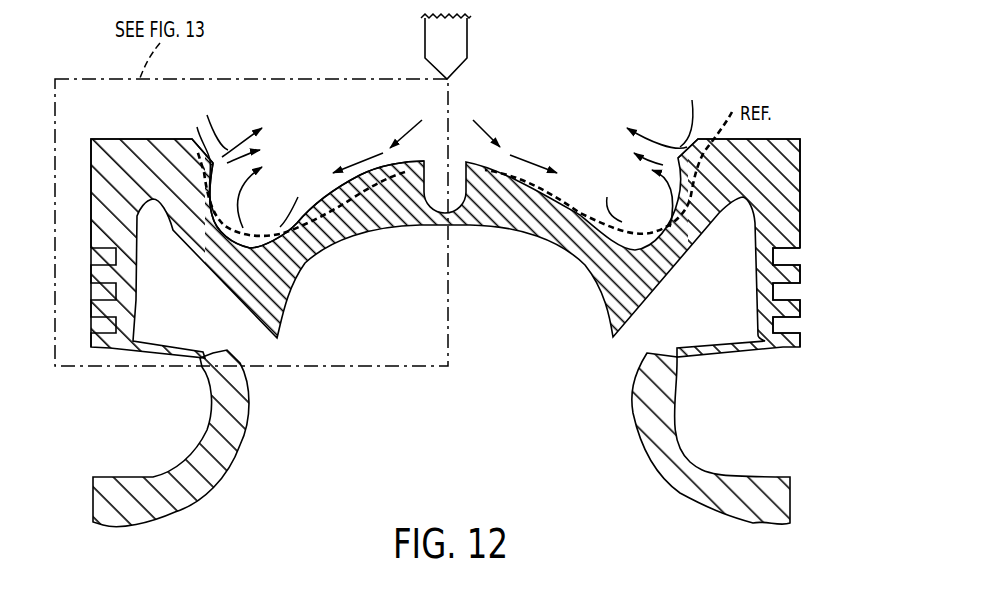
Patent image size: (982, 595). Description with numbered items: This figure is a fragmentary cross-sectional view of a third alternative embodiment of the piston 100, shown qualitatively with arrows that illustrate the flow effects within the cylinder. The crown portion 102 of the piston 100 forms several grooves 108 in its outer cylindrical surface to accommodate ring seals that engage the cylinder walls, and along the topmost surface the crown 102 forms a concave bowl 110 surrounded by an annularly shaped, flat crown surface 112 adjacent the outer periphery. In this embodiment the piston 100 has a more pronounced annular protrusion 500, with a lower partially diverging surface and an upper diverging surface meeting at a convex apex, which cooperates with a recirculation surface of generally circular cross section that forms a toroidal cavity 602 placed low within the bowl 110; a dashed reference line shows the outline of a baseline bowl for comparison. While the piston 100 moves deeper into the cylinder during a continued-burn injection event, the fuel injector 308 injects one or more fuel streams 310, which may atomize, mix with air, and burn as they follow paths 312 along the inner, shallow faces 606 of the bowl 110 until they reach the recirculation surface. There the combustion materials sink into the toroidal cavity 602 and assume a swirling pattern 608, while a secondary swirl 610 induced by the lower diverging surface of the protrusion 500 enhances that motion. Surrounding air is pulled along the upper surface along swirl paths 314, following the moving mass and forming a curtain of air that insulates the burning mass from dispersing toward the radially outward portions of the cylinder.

The piston 100 is at (817, 63).
The crown portion 102 is at (790, 168).
The grooves 108 is at (90, 255).
The bowl 110 is at (548, 93).
The flat crown surface 112 is at (103, 139).
The fuel injector 308 is at (458, 39).
The fuel streams 310 is at (490, 130).
The paths 312 is at (533, 163).
The swirl paths 314 is at (225, 152).
The annular protrusion 500 is at (680, 152).
The toroidal cavity 602 is at (253, 243).
The inner, shallow faces 606 is at (368, 180).
The swirling pattern 608 is at (243, 230).
The secondary swirl 610 is at (232, 157).